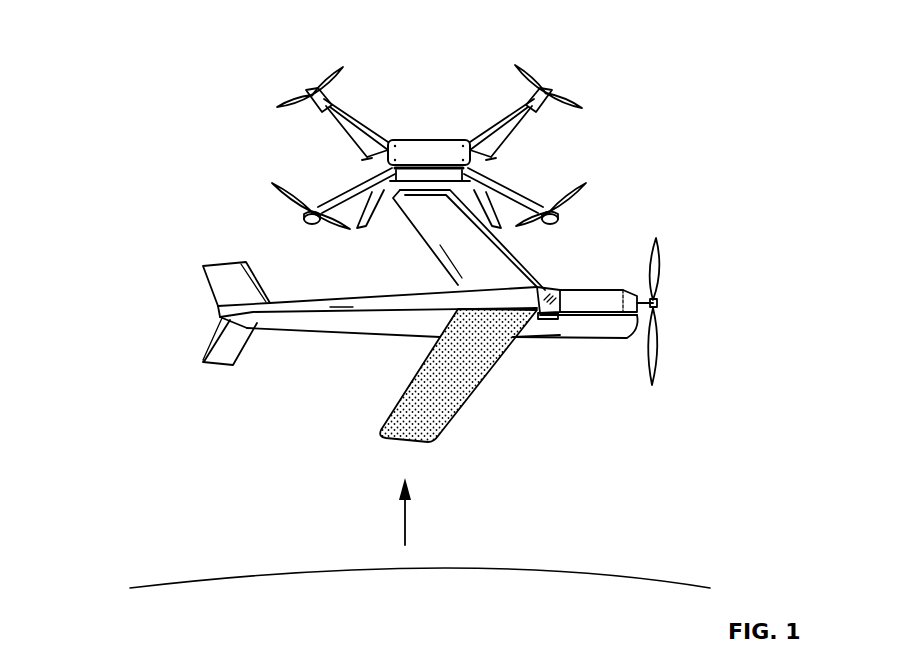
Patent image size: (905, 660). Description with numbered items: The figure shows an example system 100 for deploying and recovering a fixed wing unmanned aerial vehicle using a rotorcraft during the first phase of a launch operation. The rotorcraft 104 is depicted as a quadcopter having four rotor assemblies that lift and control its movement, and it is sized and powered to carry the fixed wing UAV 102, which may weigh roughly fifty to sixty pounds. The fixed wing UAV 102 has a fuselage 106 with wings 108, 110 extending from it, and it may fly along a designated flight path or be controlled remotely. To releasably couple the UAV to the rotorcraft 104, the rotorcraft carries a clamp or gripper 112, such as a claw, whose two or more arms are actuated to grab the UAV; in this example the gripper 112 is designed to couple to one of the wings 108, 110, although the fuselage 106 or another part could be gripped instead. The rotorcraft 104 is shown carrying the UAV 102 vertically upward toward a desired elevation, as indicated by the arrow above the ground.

The system 100 is at (115, 88).
The fixed wing UAV 102 is at (588, 329).
The rotorcraft 104 is at (427, 153).
The fuselage 106 is at (358, 325).
The wing 108 is at (400, 416).
The wing 110 is at (506, 272).
The gripper 112 is at (478, 187).